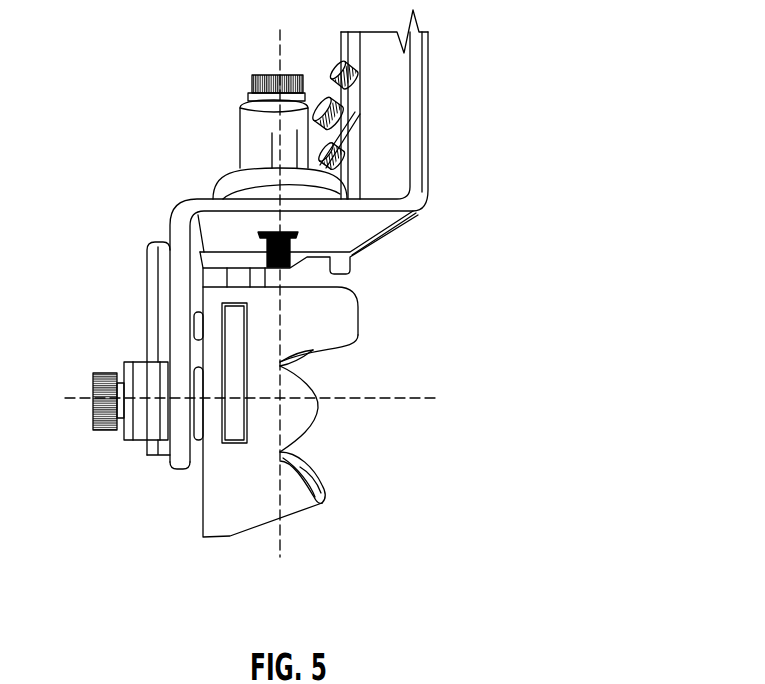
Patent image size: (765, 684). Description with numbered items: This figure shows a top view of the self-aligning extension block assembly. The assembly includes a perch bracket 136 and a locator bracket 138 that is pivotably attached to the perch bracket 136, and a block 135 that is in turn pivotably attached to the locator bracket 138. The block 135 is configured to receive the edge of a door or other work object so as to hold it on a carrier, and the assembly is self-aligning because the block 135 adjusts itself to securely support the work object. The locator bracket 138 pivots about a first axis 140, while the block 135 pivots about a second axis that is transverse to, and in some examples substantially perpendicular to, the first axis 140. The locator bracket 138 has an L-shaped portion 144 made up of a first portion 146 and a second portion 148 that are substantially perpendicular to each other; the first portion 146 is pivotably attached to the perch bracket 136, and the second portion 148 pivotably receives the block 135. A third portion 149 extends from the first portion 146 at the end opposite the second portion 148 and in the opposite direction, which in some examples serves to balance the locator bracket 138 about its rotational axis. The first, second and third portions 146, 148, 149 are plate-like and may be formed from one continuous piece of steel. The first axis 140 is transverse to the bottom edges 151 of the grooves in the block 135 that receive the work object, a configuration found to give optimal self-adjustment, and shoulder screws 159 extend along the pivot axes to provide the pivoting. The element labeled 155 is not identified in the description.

The block 135 is at (214, 510).
The perch bracket 136 is at (337, 187).
The locator bracket 138 is at (382, 219).
The first axis 140 is at (281, 533).
The L-shaped portion 144 is at (197, 198).
The first portion 146 is at (284, 215).
The second portion 148 is at (173, 330).
The third portion 149 is at (415, 80).
The bottom edges 151 is at (310, 350).
The spring arm 155 is at (320, 353).
The shoulder screws 159 is at (288, 76).